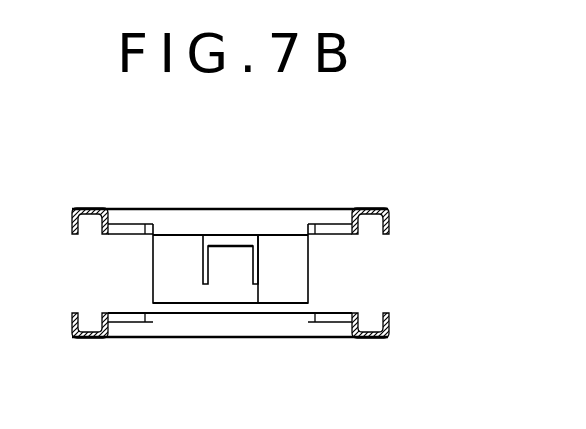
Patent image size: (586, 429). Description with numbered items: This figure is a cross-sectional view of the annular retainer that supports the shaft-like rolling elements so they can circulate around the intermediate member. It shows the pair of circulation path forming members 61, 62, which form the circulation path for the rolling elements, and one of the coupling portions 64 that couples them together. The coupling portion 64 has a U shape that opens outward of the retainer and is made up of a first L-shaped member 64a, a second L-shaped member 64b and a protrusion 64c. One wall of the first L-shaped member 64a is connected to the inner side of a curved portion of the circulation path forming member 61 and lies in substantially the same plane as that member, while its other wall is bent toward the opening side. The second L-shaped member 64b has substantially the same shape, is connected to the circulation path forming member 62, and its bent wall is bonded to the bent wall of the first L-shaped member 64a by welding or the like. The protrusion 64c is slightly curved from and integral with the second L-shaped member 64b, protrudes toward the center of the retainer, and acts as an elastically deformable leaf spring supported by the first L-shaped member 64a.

The circulation path forming member 61 is at (359, 213).
The circulation path forming member 62 is at (360, 338).
The coupling portion 64 is at (272, 279).
The first L-shaped member 64a is at (274, 232).
The second L-shaped member 64b is at (283, 270).
The protrusion 64c is at (227, 263).